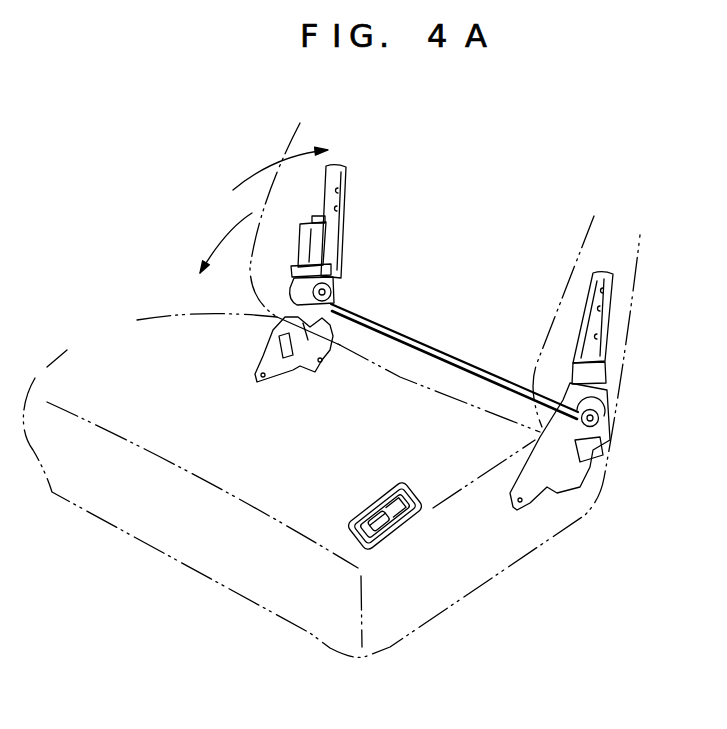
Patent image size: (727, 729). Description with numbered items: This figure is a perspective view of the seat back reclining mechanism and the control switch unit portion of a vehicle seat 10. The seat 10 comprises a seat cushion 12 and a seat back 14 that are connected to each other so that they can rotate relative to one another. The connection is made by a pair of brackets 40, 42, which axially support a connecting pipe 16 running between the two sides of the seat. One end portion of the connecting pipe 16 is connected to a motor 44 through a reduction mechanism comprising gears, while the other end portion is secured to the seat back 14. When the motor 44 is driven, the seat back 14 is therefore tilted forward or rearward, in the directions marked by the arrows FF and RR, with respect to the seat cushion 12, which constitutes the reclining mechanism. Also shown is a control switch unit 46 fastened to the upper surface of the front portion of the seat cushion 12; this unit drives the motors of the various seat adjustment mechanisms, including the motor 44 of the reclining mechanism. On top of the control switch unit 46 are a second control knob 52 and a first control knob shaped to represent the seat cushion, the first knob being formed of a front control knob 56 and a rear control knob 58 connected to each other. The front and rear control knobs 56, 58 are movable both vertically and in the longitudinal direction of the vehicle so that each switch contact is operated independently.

The seat 10 is at (192, 138).
The seat cushion 12 is at (503, 580).
The seat back 14 is at (584, 233).
The connecting pipe 16 is at (437, 345).
The bracket 40 is at (297, 367).
The bracket 42 is at (350, 178).
The motor 44 is at (304, 233).
The control switch unit 46 is at (385, 511).
The second control knob 52 is at (378, 521).
The front control knob 56 is at (396, 507).
The rear control knob 58 is at (385, 516).